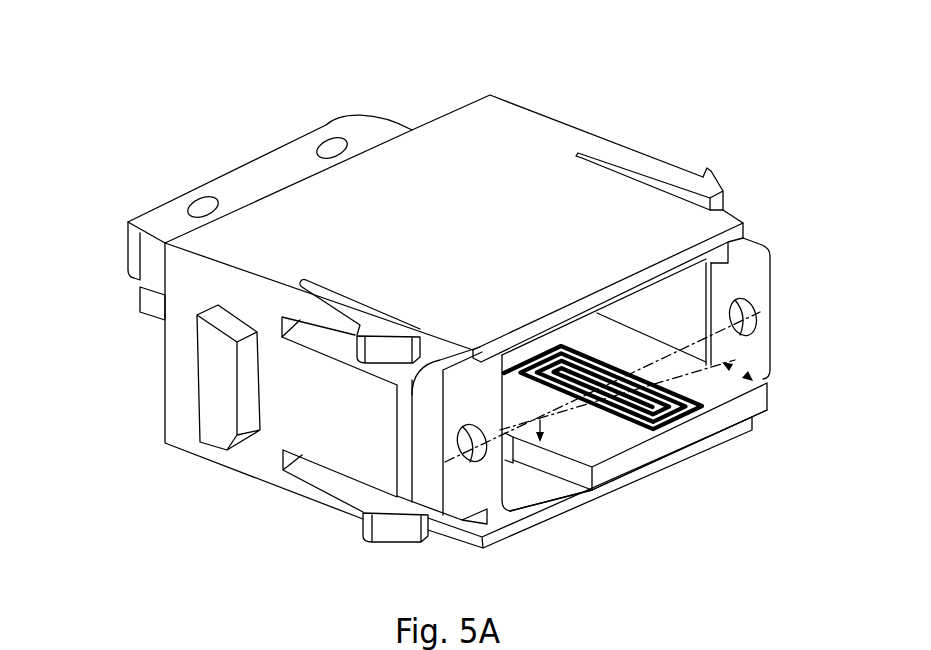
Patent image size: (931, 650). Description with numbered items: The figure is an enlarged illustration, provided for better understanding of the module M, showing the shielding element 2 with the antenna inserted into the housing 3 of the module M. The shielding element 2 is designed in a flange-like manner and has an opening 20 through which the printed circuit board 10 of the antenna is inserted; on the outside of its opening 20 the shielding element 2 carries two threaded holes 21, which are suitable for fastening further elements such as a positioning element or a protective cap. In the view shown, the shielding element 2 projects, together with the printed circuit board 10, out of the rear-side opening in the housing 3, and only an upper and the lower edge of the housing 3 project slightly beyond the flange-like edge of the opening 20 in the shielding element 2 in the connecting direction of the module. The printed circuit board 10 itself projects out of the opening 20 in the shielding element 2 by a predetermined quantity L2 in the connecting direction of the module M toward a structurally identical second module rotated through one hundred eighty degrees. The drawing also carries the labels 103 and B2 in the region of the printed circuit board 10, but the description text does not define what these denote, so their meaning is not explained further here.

The module M is at (150, 90).
The mounting flange 2 is at (263, 170).
The cover 3 is at (547, 167).
The circuit board 10 is at (143, 313).
The coil antenna 103 is at (718, 395).
The housing bottom 20 is at (531, 487).
The mounting hole 21 is at (466, 463).
The distance L2 is at (752, 378).
The board edge B2 is at (613, 467).